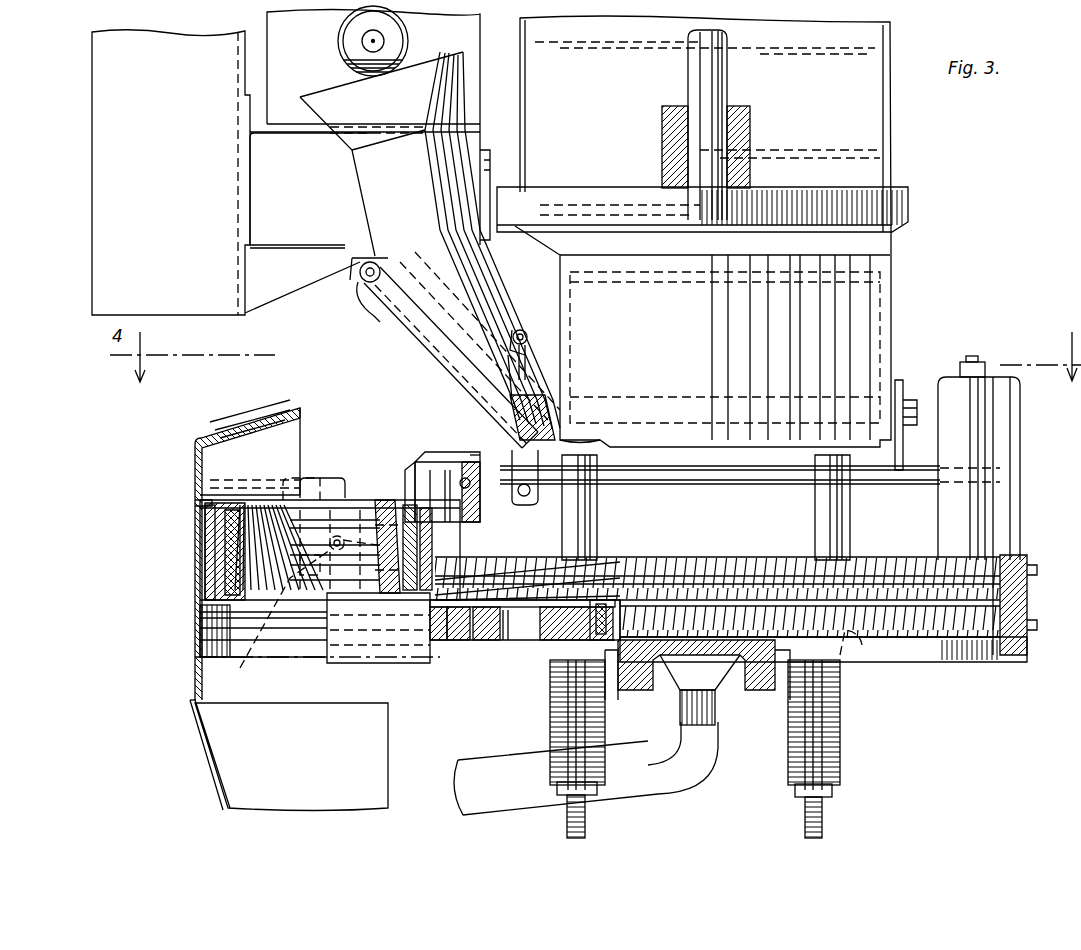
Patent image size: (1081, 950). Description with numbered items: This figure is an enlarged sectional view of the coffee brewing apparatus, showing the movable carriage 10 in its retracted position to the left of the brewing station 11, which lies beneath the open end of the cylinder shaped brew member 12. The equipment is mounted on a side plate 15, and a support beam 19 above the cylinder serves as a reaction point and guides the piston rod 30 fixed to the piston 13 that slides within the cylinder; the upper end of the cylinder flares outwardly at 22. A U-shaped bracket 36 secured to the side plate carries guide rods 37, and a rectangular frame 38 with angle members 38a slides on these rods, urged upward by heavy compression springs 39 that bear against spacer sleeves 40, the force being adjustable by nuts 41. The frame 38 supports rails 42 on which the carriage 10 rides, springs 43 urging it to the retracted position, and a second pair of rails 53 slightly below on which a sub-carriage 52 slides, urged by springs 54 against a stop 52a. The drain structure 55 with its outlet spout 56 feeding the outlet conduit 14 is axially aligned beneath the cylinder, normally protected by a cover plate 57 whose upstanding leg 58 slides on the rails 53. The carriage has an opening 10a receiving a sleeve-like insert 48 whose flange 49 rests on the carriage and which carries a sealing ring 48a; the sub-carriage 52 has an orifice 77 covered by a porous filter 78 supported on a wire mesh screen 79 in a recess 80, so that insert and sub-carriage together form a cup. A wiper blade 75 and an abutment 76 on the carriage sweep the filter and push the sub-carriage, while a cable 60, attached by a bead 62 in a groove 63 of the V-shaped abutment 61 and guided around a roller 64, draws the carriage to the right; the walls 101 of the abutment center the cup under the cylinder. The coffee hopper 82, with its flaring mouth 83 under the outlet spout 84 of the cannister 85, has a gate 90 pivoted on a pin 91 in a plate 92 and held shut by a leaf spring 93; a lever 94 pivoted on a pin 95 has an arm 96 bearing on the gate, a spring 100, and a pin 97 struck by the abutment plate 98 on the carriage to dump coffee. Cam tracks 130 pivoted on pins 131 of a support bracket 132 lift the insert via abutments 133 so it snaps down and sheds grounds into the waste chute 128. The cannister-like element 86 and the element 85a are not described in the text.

The cabinet housing 86 is at (92, 47).
The plate 92 is at (292, 255).
The cannister 85 is at (482, 60).
The outlet spout 84 is at (340, 20).
The roller shaft 85a is at (400, 33).
The outwardly flaring mouth 83 is at (328, 88).
The coffee hopper 82 is at (356, 201).
The pin 91 is at (362, 276).
The leaf spring 93 is at (378, 320).
The gate 90 is at (432, 365).
The arm 96 is at (430, 310).
The lever 94 is at (528, 332).
The pin 95 is at (528, 349).
The spring 100 is at (516, 358).
The side plate 15 is at (705, 124).
The piston rod 30 is at (730, 82).
The support beam 19 is at (752, 132).
The flared upper end 22 is at (830, 240).
The brew member 12 is at (863, 334).
The piston 13 is at (610, 280).
The U-shaped bracket 36 is at (903, 385).
The roller 64 is at (1000, 447).
The cable 60 is at (700, 484).
The spacer sleeve 40 is at (562, 522).
The brewing station 11 is at (717, 557).
The spring 43 is at (628, 557).
The rail 42 is at (765, 562).
The cover plate 57 is at (700, 612).
The upstanding leg 58 is at (622, 606).
The rectangular frame 38 is at (970, 662).
The rail 53 is at (920, 640).
The spring 54 is at (905, 640).
The angle member 38a is at (855, 670).
The compression spring 39 is at (550, 712).
The nut 41 is at (598, 790).
The guide rod 37 is at (586, 820).
The drain structure 55 is at (742, 690).
The outlet spout 56 is at (705, 762).
The outlet conduit 14 is at (503, 805).
The carriage 10 is at (200, 522).
The opening 10a is at (215, 535).
The flange 49 is at (200, 503).
The sealing ring 48a is at (230, 500).
The sleeve-like insert 48 is at (367, 496).
The abutment plate 98 is at (310, 478).
The pin 131 is at (335, 480).
The abutment 133 is at (297, 611).
The frame support bracket 132 is at (330, 632).
The wiper blade 75 is at (412, 597).
The abutment 76 is at (225, 625).
The recess 80 is at (445, 660).
The stop 52a is at (436, 660).
The wire mesh screen 79 is at (469, 648).
The sub-carriage 52 is at (482, 642).
The porous filter member 78 is at (478, 642).
The orifice 77 is at (525, 642).
The cam track 130 is at (450, 585).
The wall 101 is at (408, 480).
The bead 62 is at (460, 470).
The groove 63 is at (472, 458).
The V-shaped abutment 61 is at (472, 486).
The pin 97 is at (520, 500).
The waste chute 128 is at (215, 778).